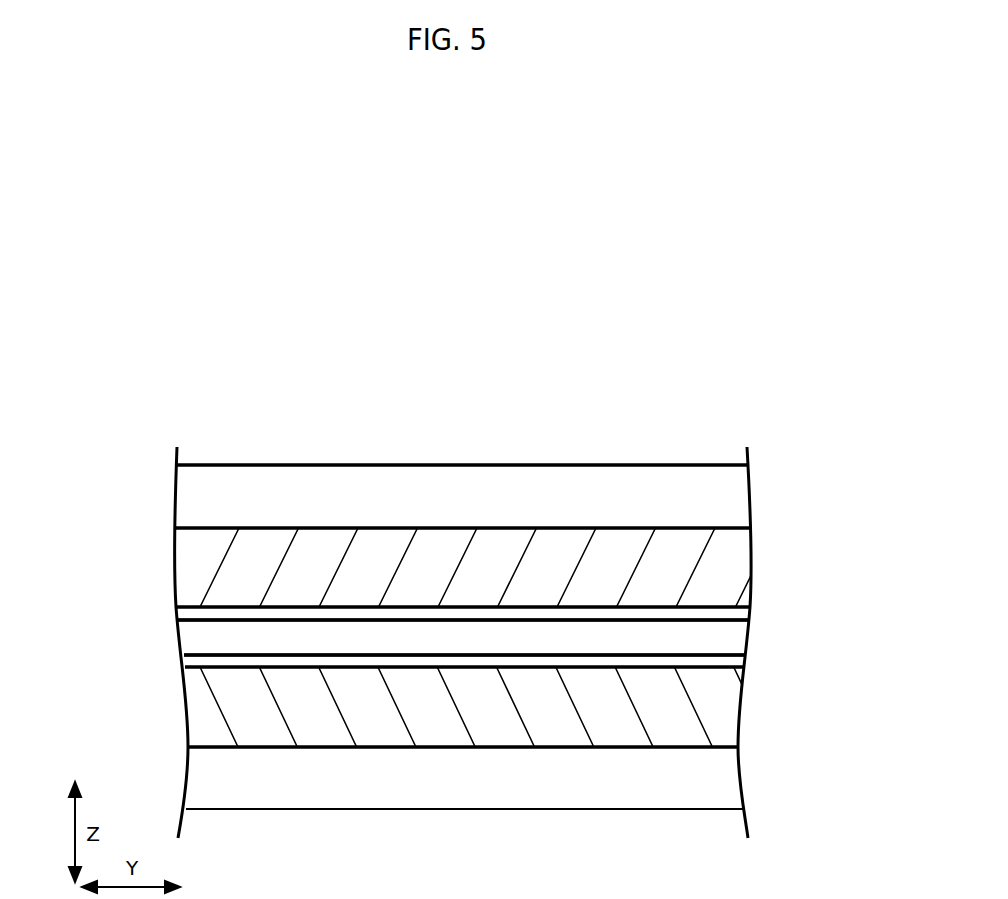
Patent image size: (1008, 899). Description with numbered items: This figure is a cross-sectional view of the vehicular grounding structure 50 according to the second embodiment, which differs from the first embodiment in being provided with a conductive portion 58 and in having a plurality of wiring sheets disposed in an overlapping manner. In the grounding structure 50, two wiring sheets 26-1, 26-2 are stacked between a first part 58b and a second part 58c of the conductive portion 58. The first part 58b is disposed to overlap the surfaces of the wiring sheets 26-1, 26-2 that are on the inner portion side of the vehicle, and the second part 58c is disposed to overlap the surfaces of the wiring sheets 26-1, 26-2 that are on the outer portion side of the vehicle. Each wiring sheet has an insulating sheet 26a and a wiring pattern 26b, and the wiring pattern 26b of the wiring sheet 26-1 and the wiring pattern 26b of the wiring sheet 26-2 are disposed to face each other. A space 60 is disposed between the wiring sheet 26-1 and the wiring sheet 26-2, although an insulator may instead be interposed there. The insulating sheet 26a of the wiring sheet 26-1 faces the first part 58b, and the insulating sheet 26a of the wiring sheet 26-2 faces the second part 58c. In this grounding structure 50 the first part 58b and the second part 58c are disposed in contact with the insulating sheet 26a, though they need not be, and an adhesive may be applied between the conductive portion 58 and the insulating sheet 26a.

The grounding structure 50 is at (320, 884).
The conductive portion 58 is at (386, 505).
The first part 58b is at (732, 492).
The second part 58c is at (727, 778).
The wiring sheet 26-1 is at (503, 548).
The wiring sheet 26-2 is at (552, 713).
The insulating sheet 26a is at (737, 556).
The wiring pattern 26b is at (737, 612).
The space 60 is at (198, 639).